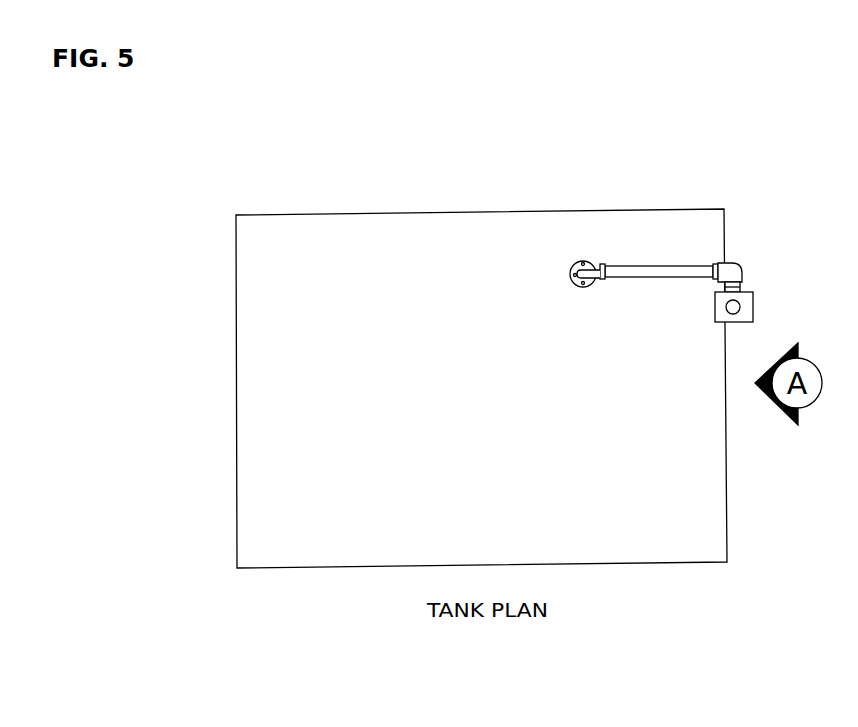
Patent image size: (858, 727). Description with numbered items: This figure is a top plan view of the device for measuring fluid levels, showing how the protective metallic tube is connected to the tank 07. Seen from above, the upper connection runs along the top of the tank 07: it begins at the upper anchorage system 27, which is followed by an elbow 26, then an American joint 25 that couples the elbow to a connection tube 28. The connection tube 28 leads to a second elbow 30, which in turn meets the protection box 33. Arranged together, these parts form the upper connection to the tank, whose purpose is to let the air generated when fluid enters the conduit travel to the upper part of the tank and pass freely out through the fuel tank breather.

The tank 07 is at (240, 402).
The American joint 25 is at (603, 273).
The elbow 26 is at (592, 271).
The upper anchorage system 27 is at (582, 262).
The connection tube 28 is at (670, 270).
The elbow 30 is at (732, 272).
The protection box 33 is at (745, 305).